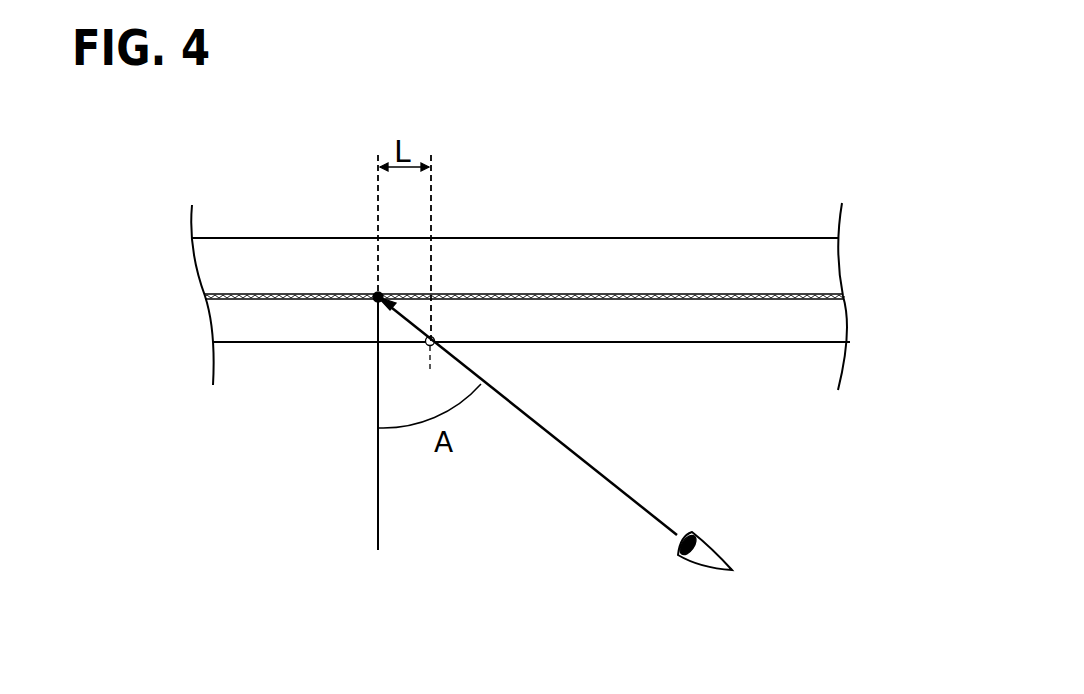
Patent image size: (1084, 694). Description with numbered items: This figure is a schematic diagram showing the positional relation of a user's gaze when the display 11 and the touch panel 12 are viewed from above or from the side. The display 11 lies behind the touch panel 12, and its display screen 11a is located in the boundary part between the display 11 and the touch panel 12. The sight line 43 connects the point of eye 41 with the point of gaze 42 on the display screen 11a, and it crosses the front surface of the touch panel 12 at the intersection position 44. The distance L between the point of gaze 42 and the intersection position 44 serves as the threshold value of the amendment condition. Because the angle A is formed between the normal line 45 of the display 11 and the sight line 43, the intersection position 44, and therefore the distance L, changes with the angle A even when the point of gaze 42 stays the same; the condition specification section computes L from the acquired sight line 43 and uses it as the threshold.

The display 11 is at (662, 255).
The display screen 11a is at (612, 292).
The touch panel 12 is at (728, 310).
The point of eye 41 is at (693, 532).
The point of gaze 42 is at (378, 297).
The sight line 43 is at (567, 450).
The intersection position 44 is at (434, 337).
The normal line 45 is at (378, 450).